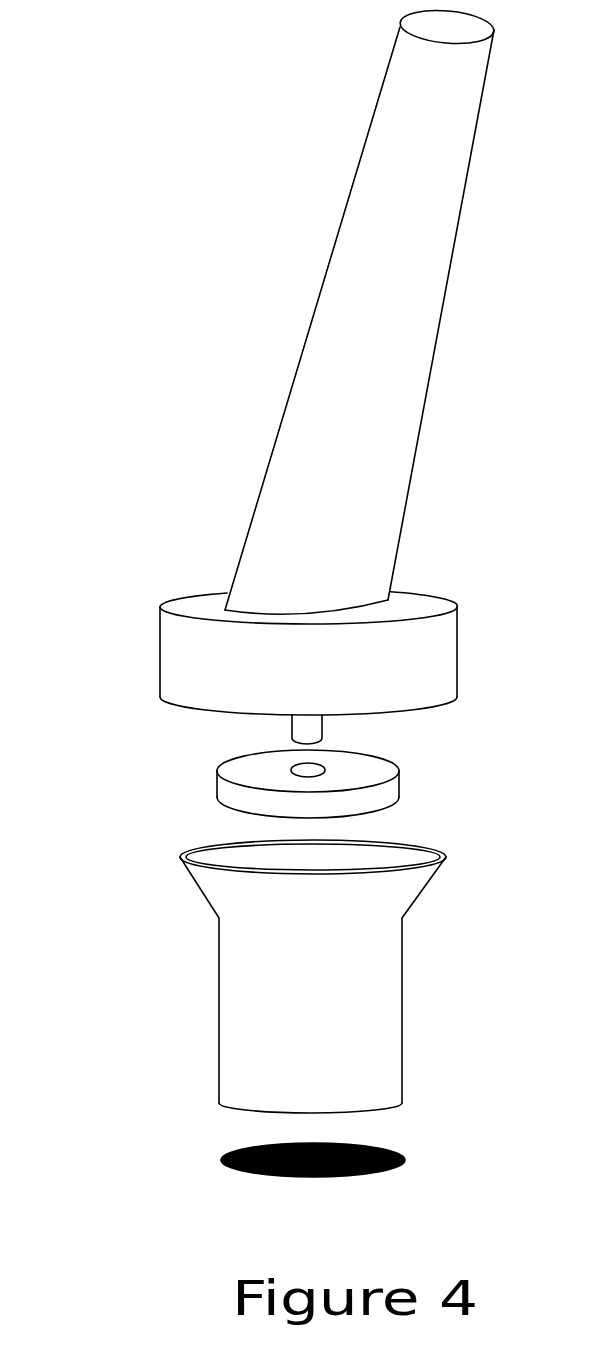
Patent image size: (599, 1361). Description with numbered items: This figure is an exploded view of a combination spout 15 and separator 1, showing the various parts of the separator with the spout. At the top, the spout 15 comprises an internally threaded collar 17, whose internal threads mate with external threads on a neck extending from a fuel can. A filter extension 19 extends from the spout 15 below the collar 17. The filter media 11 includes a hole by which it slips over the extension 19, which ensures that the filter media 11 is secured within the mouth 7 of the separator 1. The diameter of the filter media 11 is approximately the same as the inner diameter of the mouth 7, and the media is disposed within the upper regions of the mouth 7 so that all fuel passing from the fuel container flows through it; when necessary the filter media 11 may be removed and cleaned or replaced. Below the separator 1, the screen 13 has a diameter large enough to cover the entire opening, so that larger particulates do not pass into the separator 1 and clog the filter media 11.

The separator 1 is at (316, 1010).
The mouth 7 is at (272, 855).
The filter media 11 is at (387, 788).
The screen 13 is at (242, 1152).
The spout 15 is at (303, 445).
The internally threaded collar 17 is at (180, 657).
The filter extension 19 is at (308, 732).